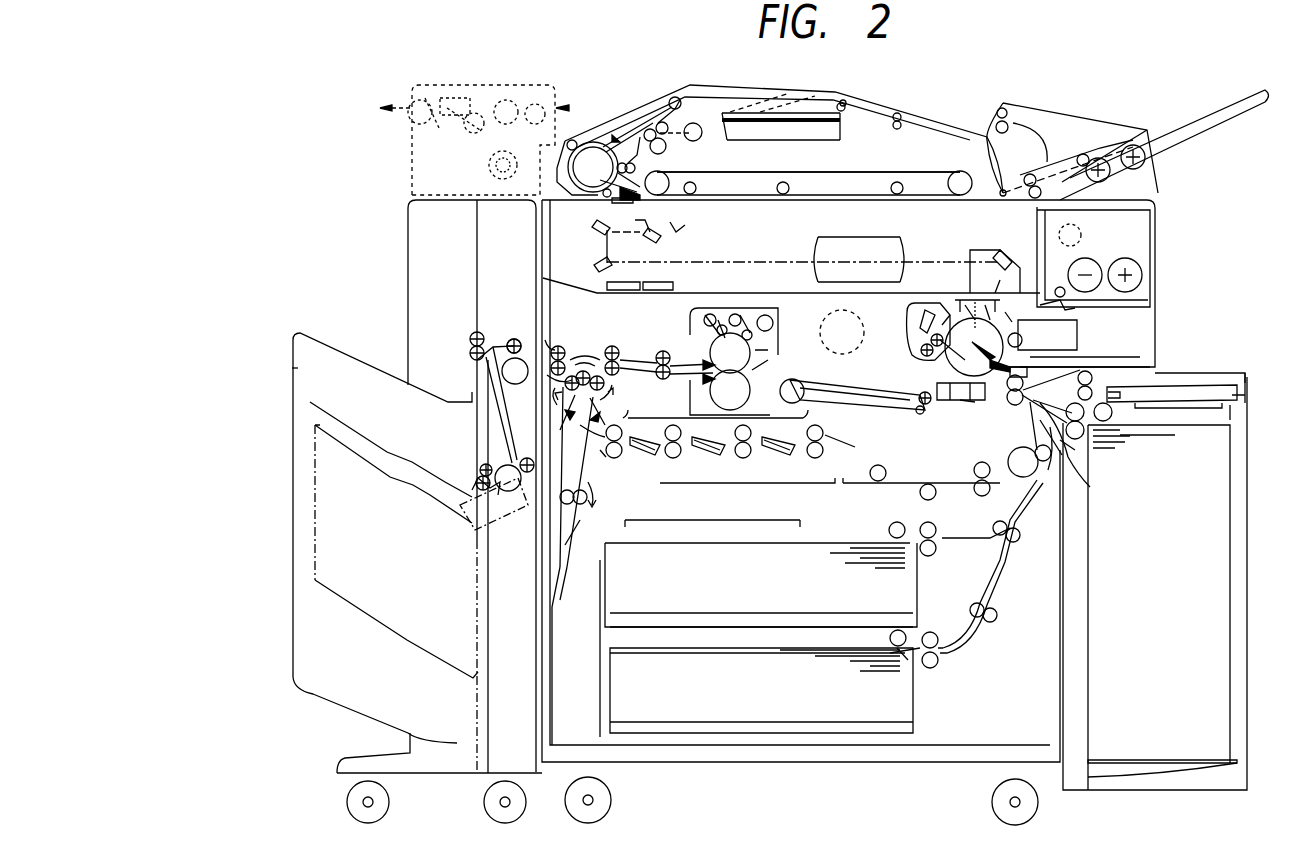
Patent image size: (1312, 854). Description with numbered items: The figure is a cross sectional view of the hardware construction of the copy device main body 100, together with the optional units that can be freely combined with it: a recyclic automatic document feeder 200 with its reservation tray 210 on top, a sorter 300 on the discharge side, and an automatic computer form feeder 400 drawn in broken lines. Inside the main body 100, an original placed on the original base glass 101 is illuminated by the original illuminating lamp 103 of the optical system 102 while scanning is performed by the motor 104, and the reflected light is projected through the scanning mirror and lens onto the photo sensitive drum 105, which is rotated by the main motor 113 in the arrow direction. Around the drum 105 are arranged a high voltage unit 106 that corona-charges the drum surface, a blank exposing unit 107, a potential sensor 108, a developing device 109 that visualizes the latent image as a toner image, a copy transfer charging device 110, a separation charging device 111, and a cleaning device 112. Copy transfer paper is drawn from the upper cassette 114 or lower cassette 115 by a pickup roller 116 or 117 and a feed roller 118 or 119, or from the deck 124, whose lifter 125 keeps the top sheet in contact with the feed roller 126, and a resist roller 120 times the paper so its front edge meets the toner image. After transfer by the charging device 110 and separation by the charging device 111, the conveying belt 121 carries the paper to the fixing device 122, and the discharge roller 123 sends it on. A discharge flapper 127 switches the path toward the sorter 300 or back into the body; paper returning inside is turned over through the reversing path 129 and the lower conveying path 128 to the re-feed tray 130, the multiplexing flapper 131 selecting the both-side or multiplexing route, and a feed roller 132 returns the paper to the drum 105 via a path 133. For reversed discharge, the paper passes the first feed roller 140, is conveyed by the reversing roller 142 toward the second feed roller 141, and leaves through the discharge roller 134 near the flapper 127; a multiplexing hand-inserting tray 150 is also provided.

The copy device main body 100 is at (1160, 305).
The original base glass 101 is at (925, 208).
The optical system 102 is at (793, 233).
The original illuminating lamp 103 is at (686, 230).
The motor 104 is at (1082, 236).
The photo sensitive drum 105 is at (915, 365).
The high voltage unit 106 is at (957, 297).
The blank exposing unit 107 is at (1015, 265).
The potential sensor 108 is at (1068, 312).
The developing device 109 is at (1080, 336).
The copy transfer charging device 110 is at (977, 405).
The separation charging device 111 is at (950, 410).
The cleaning device 112 is at (906, 320).
The main motor 113 is at (830, 352).
The upper cassette 114 is at (760, 530).
The lower cassette 115 is at (617, 650).
The pickup roller 116 is at (888, 525).
The pickup roller 117 is at (912, 668).
The feed roller 118 is at (938, 528).
The feed roller 119 is at (934, 628).
The resist roller 120 is at (1022, 404).
The conveying belt 121 is at (868, 408).
The fixing device 122 is at (683, 318).
The discharge roller 123 is at (620, 350).
The deck 124 is at (1250, 490).
The lifter 125 is at (1240, 762).
The feed roller 126 is at (1105, 440).
The discharge flapper 127 is at (598, 360).
The lower conveying path 128 is at (668, 425).
The reversing path 129 is at (572, 550).
The re-feed tray 130 is at (904, 478).
The multiplexing flapper 131 is at (620, 455).
The feed roller 132 is at (1025, 524).
The path 133 is at (1100, 492).
The discharge roller 134 is at (553, 345).
The first feed roller 140 is at (600, 390).
The second feed roller 141 is at (520, 340).
The reversing roller 142 is at (598, 492).
The multiplexing hand-inserting tray 150 is at (1222, 372).
The recyclic automatic document feeder 200 is at (929, 108).
The reservation tray 210 is at (1248, 132).
The sorter 300 is at (292, 366).
The automatic computer form feeder 400 is at (567, 100).